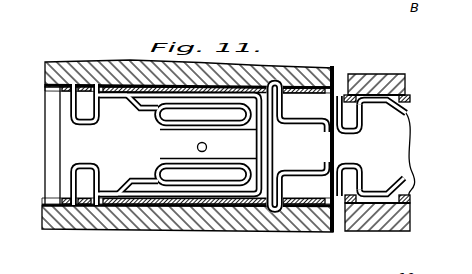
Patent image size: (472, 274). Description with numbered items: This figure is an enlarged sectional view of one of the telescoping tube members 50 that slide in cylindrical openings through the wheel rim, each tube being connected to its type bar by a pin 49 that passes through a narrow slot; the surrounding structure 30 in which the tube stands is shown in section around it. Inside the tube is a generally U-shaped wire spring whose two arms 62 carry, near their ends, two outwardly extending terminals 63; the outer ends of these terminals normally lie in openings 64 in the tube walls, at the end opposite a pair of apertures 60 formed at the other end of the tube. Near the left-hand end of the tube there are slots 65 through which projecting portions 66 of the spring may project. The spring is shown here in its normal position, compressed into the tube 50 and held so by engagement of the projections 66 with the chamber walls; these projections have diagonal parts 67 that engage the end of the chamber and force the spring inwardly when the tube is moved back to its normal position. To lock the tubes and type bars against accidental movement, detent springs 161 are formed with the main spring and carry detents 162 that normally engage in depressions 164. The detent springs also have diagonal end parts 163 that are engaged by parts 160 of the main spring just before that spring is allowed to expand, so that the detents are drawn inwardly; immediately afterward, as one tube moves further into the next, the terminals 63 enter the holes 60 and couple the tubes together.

The openings 64 is at (72, 62).
The projecting portions 66 is at (102, 88).
The slots 65 is at (125, 88).
The depressions 164 is at (298, 64).
The end plate 30 is at (325, 68).
The apertures 60 is at (337, 76).
The outwardly extending terminals 63 is at (72, 105).
The arms 62 is at (124, 103).
The diagonal parts 67 is at (89, 122).
The parts of springs 160 is at (81, 163).
The detent springs 161 is at (385, 154).
The detents 162 is at (279, 80).
The diagonal end parts 163 is at (300, 123).
The tube 50 is at (293, 84).
The pin 49 is at (207, 147).